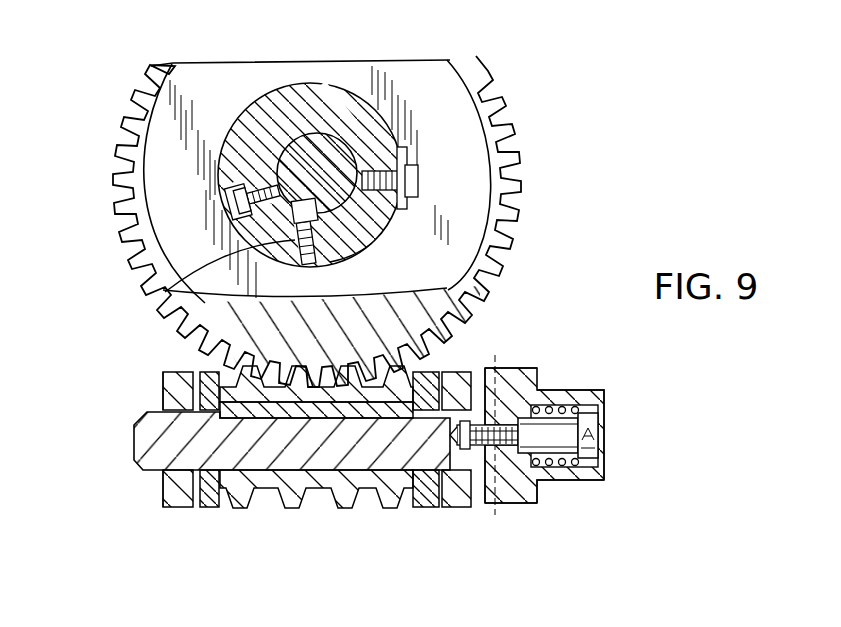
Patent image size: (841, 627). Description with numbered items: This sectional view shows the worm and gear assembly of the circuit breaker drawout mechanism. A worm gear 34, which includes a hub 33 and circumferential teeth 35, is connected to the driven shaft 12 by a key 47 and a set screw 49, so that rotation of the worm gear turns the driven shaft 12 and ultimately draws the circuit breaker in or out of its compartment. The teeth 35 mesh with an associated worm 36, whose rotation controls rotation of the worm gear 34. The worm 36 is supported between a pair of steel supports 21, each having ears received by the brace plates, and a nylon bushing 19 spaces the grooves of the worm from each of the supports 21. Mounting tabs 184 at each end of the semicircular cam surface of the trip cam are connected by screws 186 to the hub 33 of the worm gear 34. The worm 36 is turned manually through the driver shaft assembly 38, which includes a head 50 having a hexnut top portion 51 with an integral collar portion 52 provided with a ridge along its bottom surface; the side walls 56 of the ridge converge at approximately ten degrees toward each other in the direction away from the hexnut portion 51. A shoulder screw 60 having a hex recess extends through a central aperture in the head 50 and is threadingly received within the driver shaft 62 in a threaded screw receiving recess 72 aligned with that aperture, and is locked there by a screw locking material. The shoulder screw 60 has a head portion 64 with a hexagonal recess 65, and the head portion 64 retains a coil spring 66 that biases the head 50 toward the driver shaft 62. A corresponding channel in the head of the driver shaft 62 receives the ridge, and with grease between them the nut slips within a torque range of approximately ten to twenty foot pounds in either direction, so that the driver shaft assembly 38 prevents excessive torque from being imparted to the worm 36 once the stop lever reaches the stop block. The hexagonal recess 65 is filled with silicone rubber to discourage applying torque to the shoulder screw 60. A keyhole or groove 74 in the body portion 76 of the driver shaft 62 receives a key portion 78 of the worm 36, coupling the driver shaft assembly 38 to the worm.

The driven shaft 12 is at (316, 135).
The nylon bushing 19 is at (214, 509).
The steel supports 21 is at (177, 509).
The hub 33 is at (297, 86).
The worm gear 34 is at (200, 126).
The circumferential teeth 35 is at (123, 117).
The worm 36 is at (290, 509).
The driver shaft assembly 38 is at (500, 515).
The key 47 is at (357, 250).
The set screw 49 is at (165, 292).
The head 50 is at (562, 390).
The hexnut top portion 51 is at (582, 481).
The collar portion 52 is at (540, 366).
The side walls 56 is at (557, 482).
The shoulder screw 60 is at (600, 421).
The driver shaft 62 is at (487, 368).
The head portion 64 is at (598, 456).
The hexagonal recess 65 is at (598, 436).
The coil spring 66 is at (582, 390).
The threaded screw receiving recess 72 is at (482, 503).
The keyhole or groove 74 is at (258, 509).
The body portion 76 is at (143, 473).
The key portion 78 is at (163, 392).
The mounting tabs 184 is at (230, 187).
The screws 186 is at (226, 213).